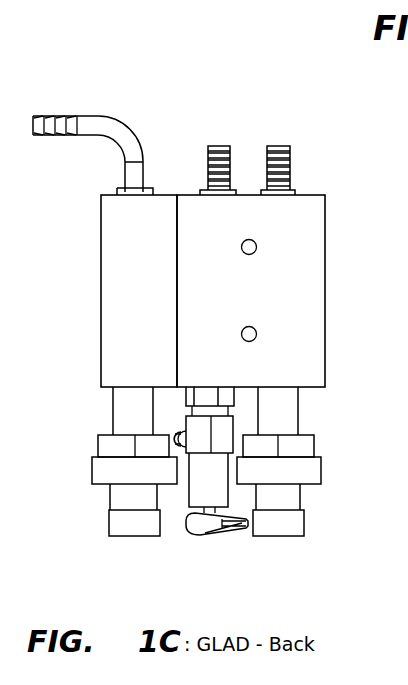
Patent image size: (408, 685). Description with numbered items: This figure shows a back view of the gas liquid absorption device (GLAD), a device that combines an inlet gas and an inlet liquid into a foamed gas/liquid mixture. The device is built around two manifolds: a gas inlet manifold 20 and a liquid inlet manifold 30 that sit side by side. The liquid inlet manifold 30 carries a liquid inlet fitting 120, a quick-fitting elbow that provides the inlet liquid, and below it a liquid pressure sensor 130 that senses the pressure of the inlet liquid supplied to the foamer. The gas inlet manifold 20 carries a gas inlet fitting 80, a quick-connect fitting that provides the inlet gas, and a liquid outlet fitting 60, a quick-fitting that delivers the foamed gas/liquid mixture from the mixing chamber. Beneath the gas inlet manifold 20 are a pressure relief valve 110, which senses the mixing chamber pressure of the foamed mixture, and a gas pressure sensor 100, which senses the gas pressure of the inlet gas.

The gas inlet manifold 20 is at (307, 278).
The liquid inlet manifold 30 is at (118, 292).
The liquid outlet fitting 60 is at (218, 137).
The gas inlet fitting 80 is at (280, 137).
The gas pressure sensor 100 is at (277, 545).
The pressure relief valve 110 is at (203, 543).
The liquid inlet fitting 120 is at (114, 112).
The liquid pressure sensor 130 is at (103, 543).